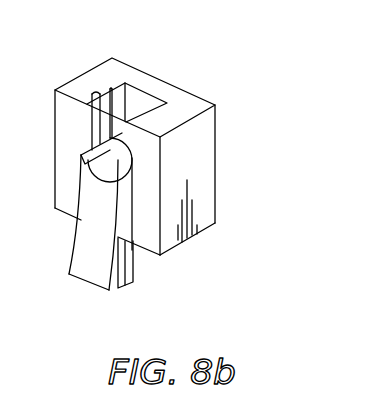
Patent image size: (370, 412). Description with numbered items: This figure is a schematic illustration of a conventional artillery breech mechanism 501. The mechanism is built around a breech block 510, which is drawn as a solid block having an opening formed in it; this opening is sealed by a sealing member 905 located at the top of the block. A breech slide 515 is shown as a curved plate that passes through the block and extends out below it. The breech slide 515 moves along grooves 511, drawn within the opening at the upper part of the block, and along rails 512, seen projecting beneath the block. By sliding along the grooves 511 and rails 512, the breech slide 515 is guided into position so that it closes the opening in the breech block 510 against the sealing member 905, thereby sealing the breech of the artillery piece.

The breech mechanism 501 is at (252, 119).
The breech block 510 is at (218, 210).
The grooves 511 is at (91, 101).
The rails 512 is at (127, 287).
The breech slide 515 is at (86, 281).
The sealing member 905 is at (138, 113).